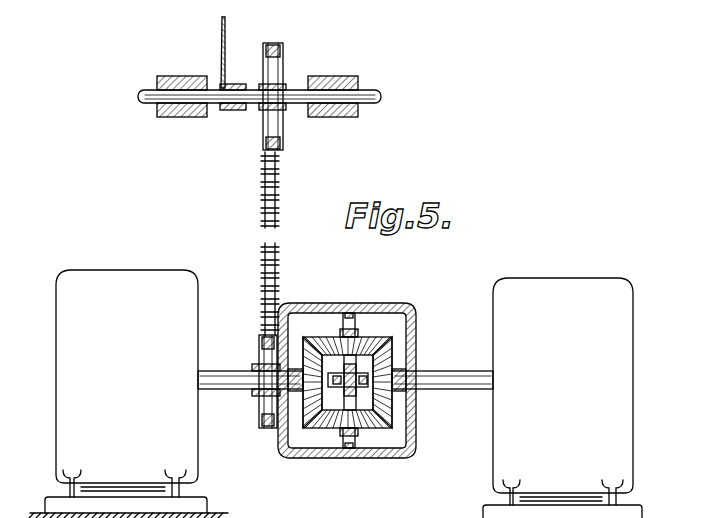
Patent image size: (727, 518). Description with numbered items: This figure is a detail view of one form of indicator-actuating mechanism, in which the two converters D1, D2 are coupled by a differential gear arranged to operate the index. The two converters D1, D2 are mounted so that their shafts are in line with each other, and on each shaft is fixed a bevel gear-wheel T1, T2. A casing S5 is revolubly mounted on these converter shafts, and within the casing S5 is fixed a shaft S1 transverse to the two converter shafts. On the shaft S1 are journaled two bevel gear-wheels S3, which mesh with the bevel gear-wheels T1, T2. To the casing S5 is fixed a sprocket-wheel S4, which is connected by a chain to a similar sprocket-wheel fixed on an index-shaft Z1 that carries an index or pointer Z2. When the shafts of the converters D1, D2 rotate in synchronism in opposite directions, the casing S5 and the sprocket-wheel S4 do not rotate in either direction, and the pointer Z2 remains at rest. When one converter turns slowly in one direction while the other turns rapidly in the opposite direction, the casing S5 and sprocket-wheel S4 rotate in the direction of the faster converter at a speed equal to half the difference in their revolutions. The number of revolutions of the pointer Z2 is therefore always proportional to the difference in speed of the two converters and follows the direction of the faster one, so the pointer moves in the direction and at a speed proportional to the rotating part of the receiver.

The index or pointer Z2 is at (222, 56).
The index-shaft Z1 is at (251, 105).
The casing S5 is at (345, 306).
The shaft S1 is at (357, 324).
The bevel gear-wheels S3 is at (330, 338).
The sprocket-wheel S4 is at (258, 363).
The bevel gear-wheel T1 is at (307, 410).
The bevel gear-wheel T2 is at (385, 362).
The converter D1 is at (128, 394).
The converter D2 is at (562, 398).